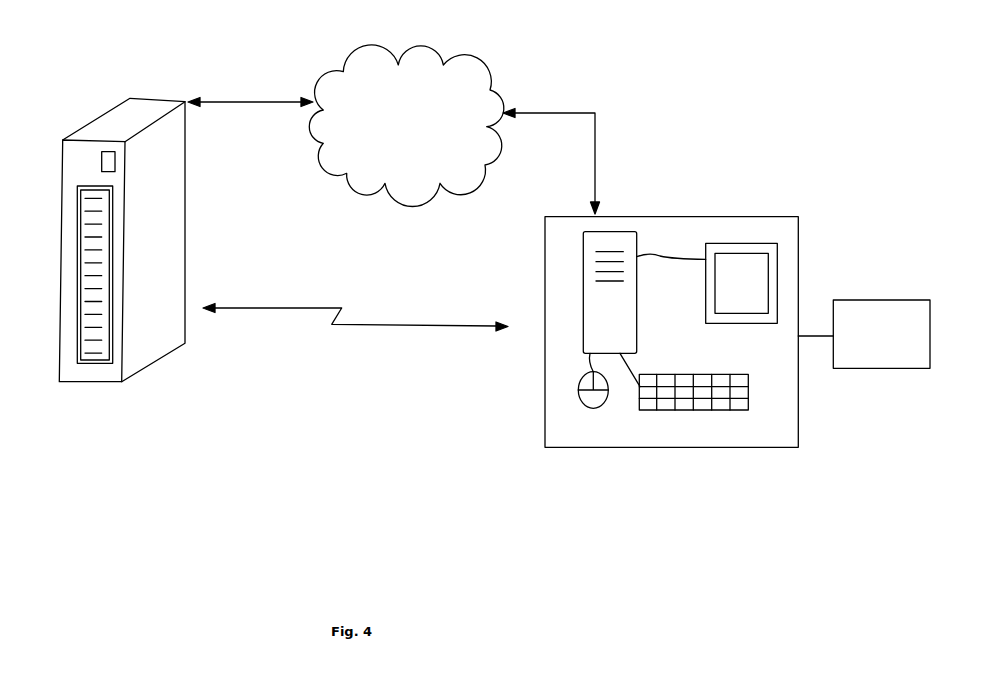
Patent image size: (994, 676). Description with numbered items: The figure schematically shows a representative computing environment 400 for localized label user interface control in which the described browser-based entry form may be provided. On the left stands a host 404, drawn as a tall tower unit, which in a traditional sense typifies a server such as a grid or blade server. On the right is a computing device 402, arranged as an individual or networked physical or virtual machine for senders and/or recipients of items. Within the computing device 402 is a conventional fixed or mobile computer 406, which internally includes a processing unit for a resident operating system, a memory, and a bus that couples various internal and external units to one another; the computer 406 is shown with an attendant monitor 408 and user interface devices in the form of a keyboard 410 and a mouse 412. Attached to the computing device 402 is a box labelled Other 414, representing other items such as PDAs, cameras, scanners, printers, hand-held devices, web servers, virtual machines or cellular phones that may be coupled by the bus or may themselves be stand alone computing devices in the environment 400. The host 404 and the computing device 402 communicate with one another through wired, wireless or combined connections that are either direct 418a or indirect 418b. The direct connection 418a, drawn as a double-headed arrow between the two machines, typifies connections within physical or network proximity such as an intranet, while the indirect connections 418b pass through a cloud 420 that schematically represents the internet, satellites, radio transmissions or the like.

The computing environment 400 is at (211, 453).
The computing device 402 is at (672, 217).
The host 404 is at (62, 270).
The computer 406 is at (583, 302).
The monitor 408 is at (703, 297).
The keyboard 410 is at (665, 410).
The mouse 412 is at (598, 407).
The other items 414 is at (870, 300).
The direct connection 418a is at (388, 323).
The indirect connection 418b is at (247, 100).
The network 420 is at (418, 50).